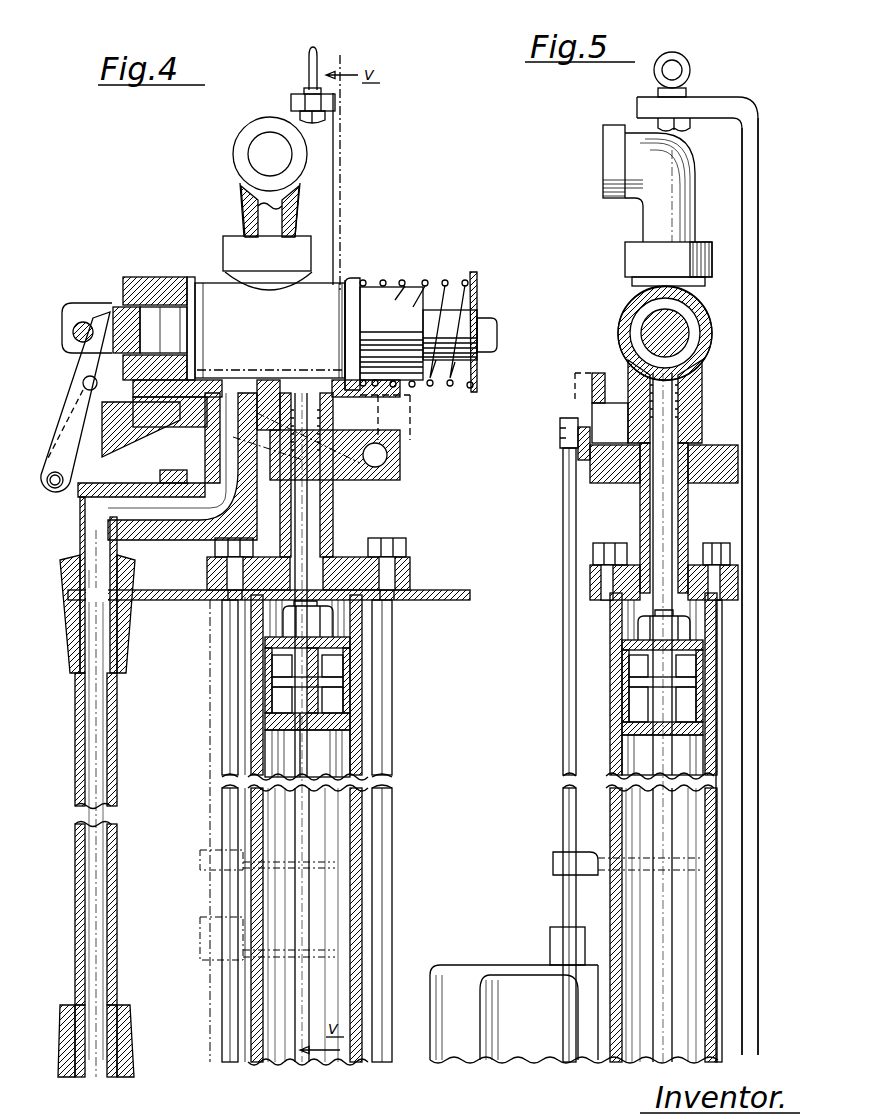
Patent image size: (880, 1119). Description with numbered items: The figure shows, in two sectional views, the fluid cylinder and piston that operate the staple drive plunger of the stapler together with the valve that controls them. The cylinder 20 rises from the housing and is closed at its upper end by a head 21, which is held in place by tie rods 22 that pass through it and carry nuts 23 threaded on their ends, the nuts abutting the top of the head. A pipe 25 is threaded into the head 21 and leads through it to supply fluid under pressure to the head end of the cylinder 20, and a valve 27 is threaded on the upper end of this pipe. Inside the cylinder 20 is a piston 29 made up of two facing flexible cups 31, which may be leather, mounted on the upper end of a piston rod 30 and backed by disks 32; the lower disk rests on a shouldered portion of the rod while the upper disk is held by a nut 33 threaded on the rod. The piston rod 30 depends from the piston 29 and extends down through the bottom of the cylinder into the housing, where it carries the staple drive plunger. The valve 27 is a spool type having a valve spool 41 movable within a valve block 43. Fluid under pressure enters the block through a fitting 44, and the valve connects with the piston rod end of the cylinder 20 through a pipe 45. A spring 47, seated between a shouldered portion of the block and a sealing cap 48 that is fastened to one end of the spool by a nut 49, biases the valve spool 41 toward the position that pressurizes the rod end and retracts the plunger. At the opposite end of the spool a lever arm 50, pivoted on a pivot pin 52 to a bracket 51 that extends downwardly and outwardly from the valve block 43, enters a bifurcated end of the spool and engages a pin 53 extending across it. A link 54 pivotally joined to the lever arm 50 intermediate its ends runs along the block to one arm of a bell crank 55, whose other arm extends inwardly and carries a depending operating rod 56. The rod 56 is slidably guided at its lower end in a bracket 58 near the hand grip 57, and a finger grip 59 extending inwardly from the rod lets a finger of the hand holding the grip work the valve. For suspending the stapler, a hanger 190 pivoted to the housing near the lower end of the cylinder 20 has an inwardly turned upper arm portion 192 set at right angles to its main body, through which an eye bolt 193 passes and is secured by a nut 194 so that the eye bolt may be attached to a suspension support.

In FIG. 4, the eye bolt 193 is at (316, 60).
In FIG. 5, the eye bolt 193 is at (682, 56).
In FIG. 4, the upper arm portion 192 is at (336, 101).
In FIG. 5, the upper arm portion 192 is at (712, 106).
In FIG. 4, the nut 194 is at (303, 116).
In FIG. 5, the nut 194 is at (658, 125).
In FIG. 4, the hanger 190 is at (318, 190).
In FIG. 5, the hanger 190 is at (752, 520).
In FIG. 4, the fitting 44 is at (248, 140).
In FIG. 5, the fitting 44 is at (685, 176).
In FIG. 4, the pipe 45 is at (247, 218).
In FIG. 4, the valve block 43 is at (207, 283).
In FIG. 5, the valve block 43 is at (622, 345).
In FIG. 4, the valve 27 is at (355, 279).
In FIG. 5, the valve 27 is at (620, 320).
In FIG. 4, the spring 47 is at (362, 284).
In FIG. 4, the valve spool 41 is at (447, 316).
In FIG. 5, the valve spool 41 is at (690, 335).
In FIG. 4, the sealing cap 48 is at (479, 286).
In FIG. 4, the nut 49 is at (488, 353).
In FIG. 4, the pin 53 is at (86, 322).
In FIG. 4, the link 54 is at (83, 383).
In FIG. 4, the lever arm 50 is at (72, 416).
In FIG. 4, the bracket 51 is at (150, 440).
In FIG. 4, the pivot pin 52 is at (52, 487).
In FIG. 4, the bell crank 55 is at (402, 436).
In FIG. 4, the pipe 25 is at (333, 520).
In FIG. 5, the pipe 25 is at (700, 443).
In FIG. 4, the nuts 23 is at (243, 538).
In FIG. 5, the nuts 23 is at (602, 543).
In FIG. 4, the head 21 is at (412, 592).
In FIG. 4, the tie rods 22 is at (225, 680).
In FIG. 5, the tie rods 22 is at (714, 548).
In FIG. 4, the cylinder 20 is at (362, 772).
In FIG. 5, the cylinder 20 is at (717, 836).
In FIG. 4, the nut 33 is at (322, 623).
In FIG. 5, the nut 33 is at (640, 628).
In FIG. 4, the disks 32 is at (350, 641).
In FIG. 5, the disks 32 is at (703, 644).
In FIG. 4, the flexible cups 31 is at (349, 651).
In FIG. 5, the flexible cups 31 is at (703, 680).
In FIG. 4, the piston 29 is at (352, 662).
In FIG. 5, the piston 29 is at (705, 665).
In FIG. 4, the piston rod 30 is at (315, 828).
In FIG. 5, the piston rod 30 is at (665, 940).
In FIG. 5, the operating rod 56 is at (563, 832).
In FIG. 5, the finger grip 59 is at (553, 860).
In FIG. 5, the bracket 58 is at (550, 945).
In FIG. 5, the hand grip 57 is at (448, 965).